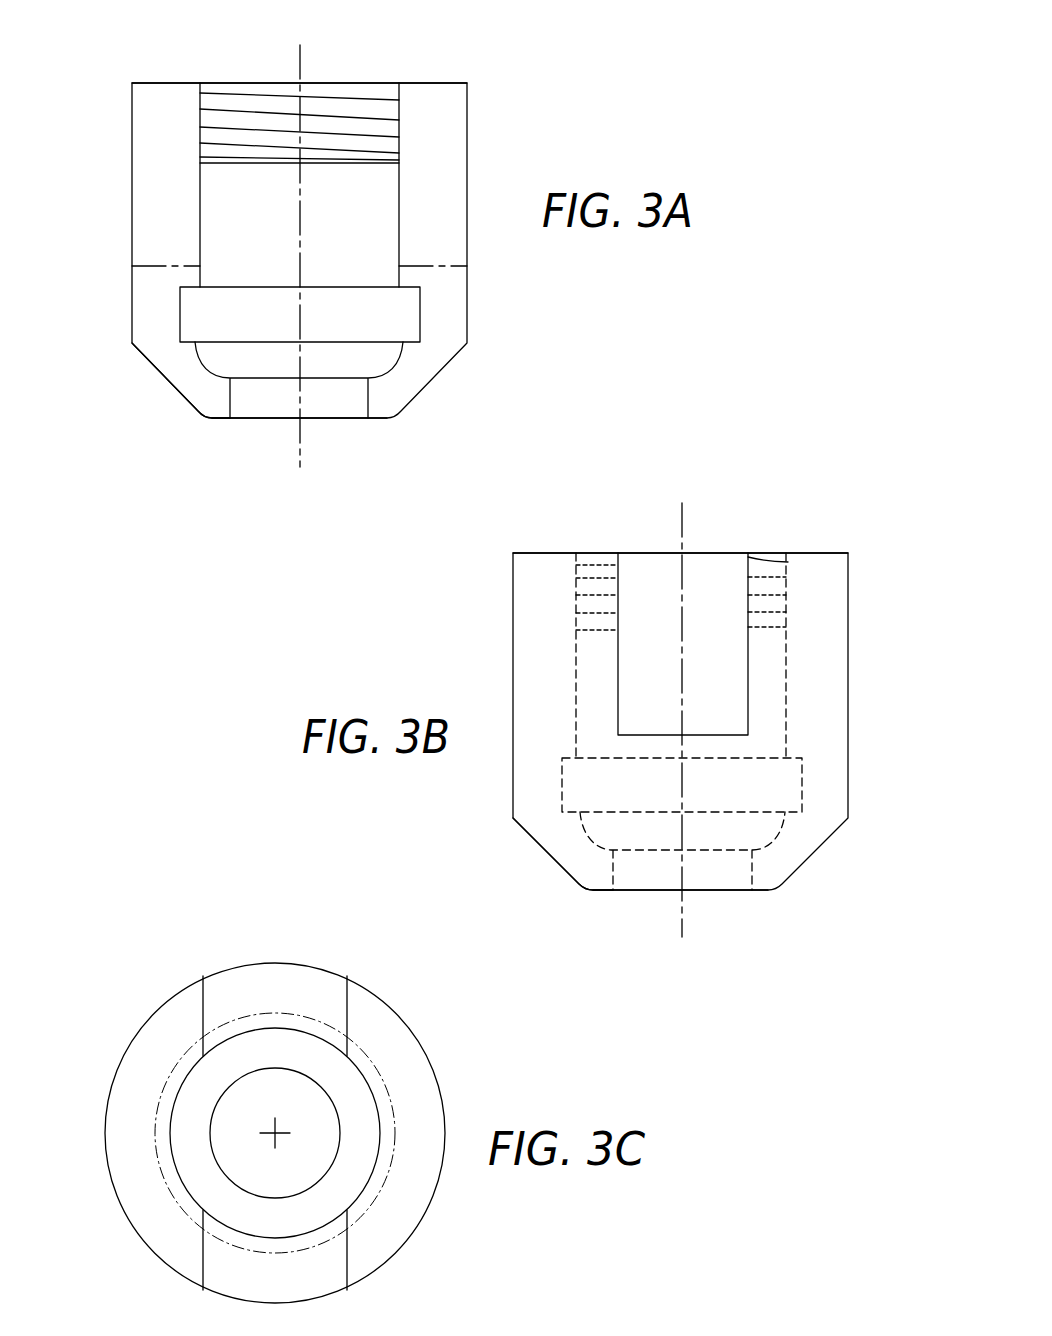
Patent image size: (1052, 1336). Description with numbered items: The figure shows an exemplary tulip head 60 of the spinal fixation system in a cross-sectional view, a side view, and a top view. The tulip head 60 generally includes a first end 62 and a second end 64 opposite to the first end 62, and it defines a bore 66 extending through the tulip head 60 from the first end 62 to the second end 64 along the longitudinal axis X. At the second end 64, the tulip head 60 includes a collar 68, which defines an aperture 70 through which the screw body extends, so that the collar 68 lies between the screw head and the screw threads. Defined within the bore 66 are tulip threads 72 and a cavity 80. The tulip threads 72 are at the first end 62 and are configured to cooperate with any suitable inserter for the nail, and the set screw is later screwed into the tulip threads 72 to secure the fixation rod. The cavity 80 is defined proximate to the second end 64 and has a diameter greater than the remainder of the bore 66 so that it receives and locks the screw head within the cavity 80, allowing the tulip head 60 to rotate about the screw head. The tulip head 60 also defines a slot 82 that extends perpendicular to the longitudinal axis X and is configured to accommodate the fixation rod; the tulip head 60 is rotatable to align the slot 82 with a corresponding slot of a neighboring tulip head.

In FIG. 3A, the tulip head 60 is at (78, 133).
In FIG. 3B, the tulip head 60 is at (857, 461).
In FIG. 3C, the tulip head 60 is at (145, 969).
In FIG. 3A, the first end 62 is at (165, 83).
In FIG. 3B, the first end 62 is at (549, 553).
In FIG. 3A, the second end 64 is at (202, 419).
In FIG. 3B, the second end 64 is at (583, 890).
In FIG. 3A, the bore 66 is at (398, 210).
In FIG. 3B, the bore 66 is at (681, 655).
In FIG. 3C, the bore 66 is at (173, 1090).
In FIG. 3A, the collar 68 is at (222, 419).
In FIG. 3B, the collar 68 is at (603, 891).
In FIG. 3A, the aperture 70 is at (368, 402).
In FIG. 3B, the aperture 70 is at (749, 869).
In FIG. 3C, the aperture 70 is at (211, 1133).
In FIG. 3A, the tulip threads 72 is at (236, 97).
In FIG. 3B, the tulip threads 72 is at (682, 593).
In FIG. 3A, the cavity 80 is at (368, 290).
In FIG. 3B, the cavity 80 is at (802, 765).
In FIG. 3C, the cavity 80 is at (395, 1133).
In FIG. 3B, the slot 82 is at (745, 692).
In FIG. 3C, the slot 82 is at (348, 1003).
In FIG. 3A, the longitudinal axis X is at (300, 47).
In FIG. 3B, the longitudinal axis X is at (682, 518).
In FIG. 3C, the longitudinal axis X is at (276, 1130).